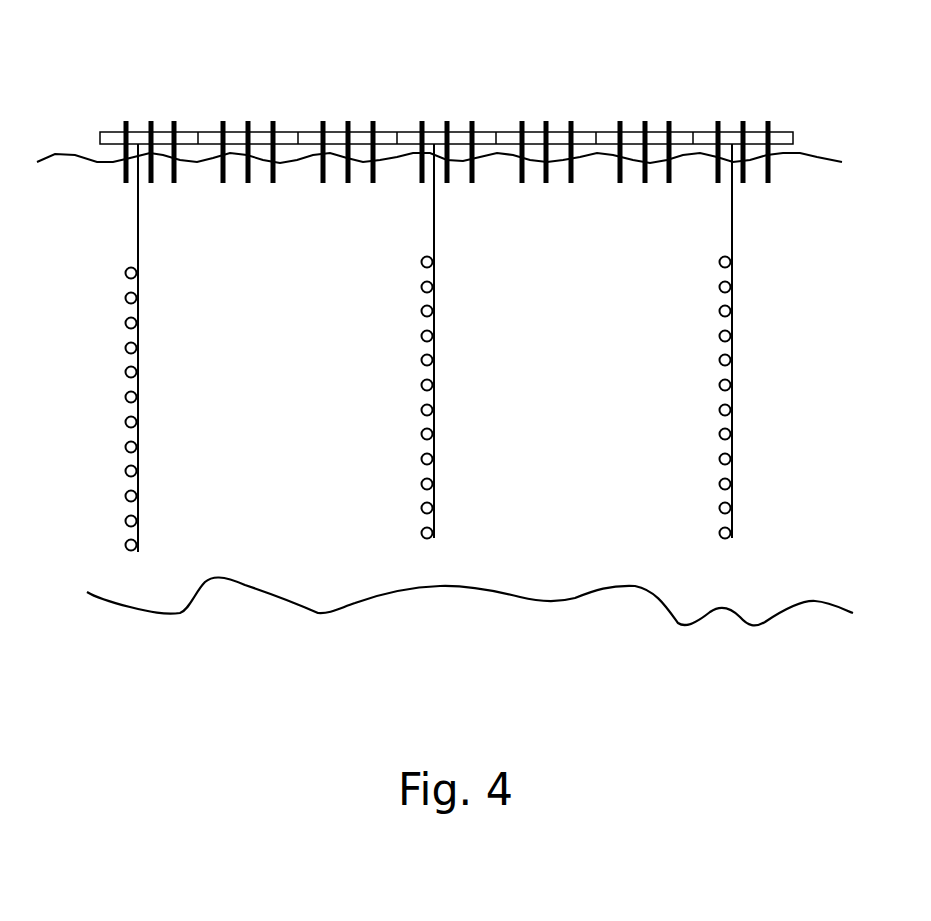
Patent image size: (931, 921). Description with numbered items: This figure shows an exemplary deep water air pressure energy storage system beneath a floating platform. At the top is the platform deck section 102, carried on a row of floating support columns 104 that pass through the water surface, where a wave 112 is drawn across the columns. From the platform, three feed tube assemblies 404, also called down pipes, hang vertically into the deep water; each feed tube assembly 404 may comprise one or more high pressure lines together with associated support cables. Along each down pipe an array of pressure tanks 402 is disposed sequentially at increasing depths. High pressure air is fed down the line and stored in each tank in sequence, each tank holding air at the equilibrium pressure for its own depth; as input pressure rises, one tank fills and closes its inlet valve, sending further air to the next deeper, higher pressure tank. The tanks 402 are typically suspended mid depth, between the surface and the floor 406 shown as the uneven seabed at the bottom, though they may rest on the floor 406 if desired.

The platform deck section 102 is at (296, 131).
The floating support columns 104 is at (447, 121).
The wave 112 is at (56, 153).
The pressure tanks 402 is at (421, 312).
The feed tube assembly 404 is at (433, 228).
The floor 406 is at (390, 595).